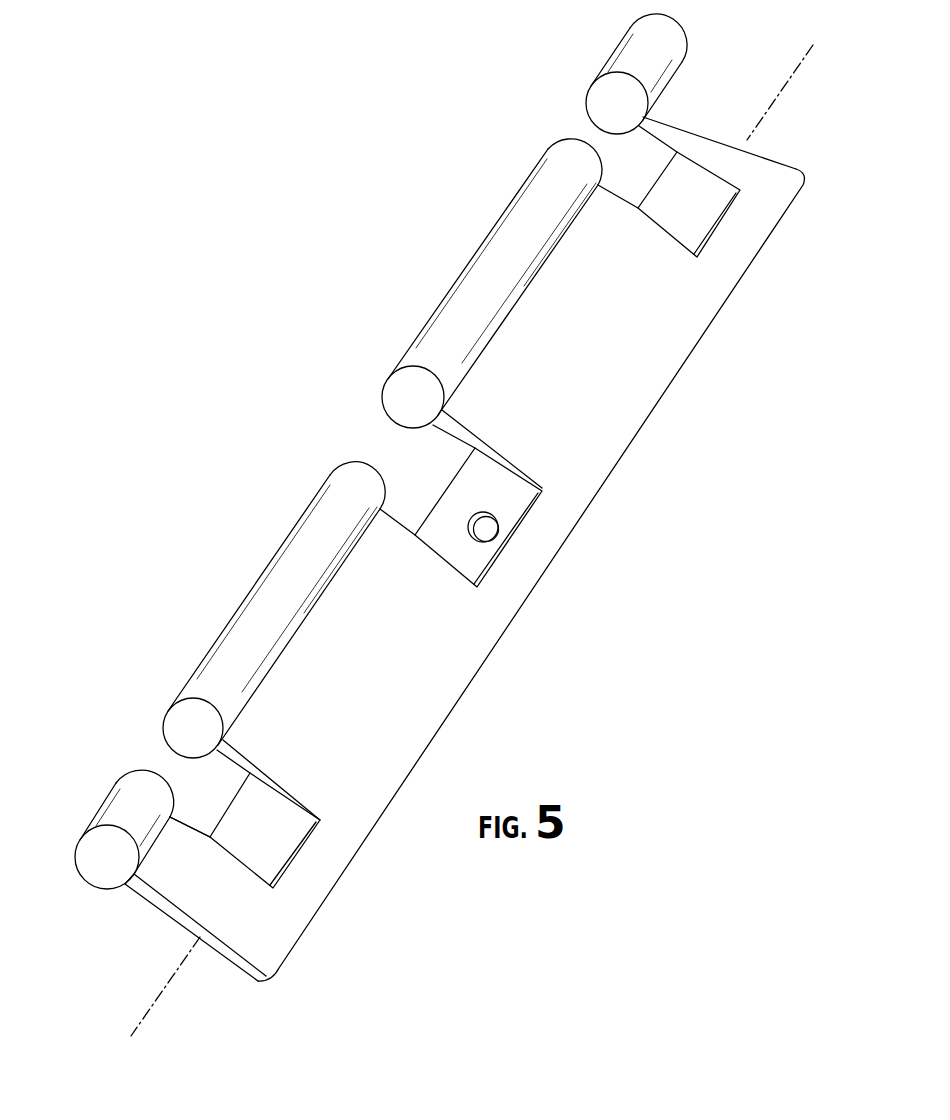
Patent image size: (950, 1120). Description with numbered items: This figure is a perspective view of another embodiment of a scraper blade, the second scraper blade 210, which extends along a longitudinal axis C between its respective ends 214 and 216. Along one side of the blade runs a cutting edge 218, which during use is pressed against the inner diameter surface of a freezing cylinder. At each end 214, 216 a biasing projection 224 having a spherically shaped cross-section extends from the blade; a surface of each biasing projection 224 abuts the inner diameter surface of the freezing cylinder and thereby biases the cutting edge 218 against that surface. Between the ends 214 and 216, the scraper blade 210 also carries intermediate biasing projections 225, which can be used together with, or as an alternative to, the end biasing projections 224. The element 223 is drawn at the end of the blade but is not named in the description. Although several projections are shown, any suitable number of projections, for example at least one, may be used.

The second scraper blade 210 is at (665, 437).
The end 214 is at (227, 950).
The end 216 is at (760, 162).
The cutting edge 218 is at (572, 536).
The cylindrical hinge sleeve 223 is at (103, 887).
The biasing projection 224 is at (688, 105).
The intermediate biasing projections 225 is at (483, 262).
The longitudinal axis C is at (806, 60).